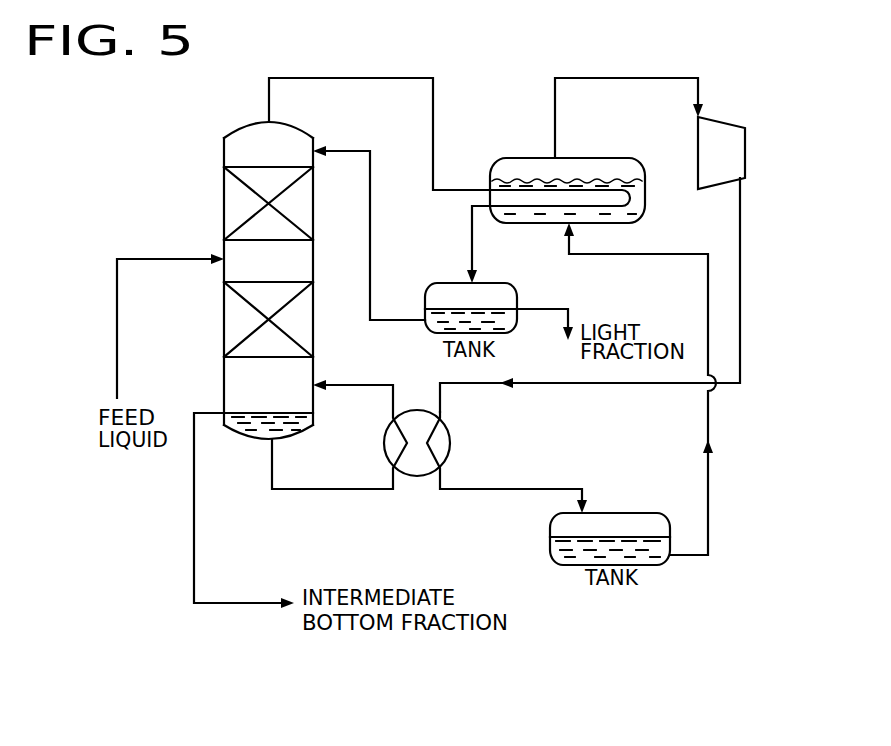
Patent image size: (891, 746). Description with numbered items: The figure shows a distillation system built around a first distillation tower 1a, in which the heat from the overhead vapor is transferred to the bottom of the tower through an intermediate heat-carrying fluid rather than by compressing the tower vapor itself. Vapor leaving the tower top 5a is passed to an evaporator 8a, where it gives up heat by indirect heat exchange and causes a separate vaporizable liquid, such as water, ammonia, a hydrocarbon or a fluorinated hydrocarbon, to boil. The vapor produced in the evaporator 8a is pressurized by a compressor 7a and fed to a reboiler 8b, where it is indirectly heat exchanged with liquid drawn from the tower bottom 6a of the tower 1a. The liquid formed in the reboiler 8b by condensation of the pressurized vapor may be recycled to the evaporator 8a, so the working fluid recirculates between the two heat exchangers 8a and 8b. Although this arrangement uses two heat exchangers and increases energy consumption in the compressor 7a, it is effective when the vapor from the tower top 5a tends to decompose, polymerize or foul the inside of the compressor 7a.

The first distillation tower 1a is at (212, 190).
The tower top 5a is at (250, 136).
The tower bottom 6a is at (258, 385).
The compressor 7a is at (745, 142).
The evaporator 8a is at (517, 164).
The reboiler 8b is at (452, 448).